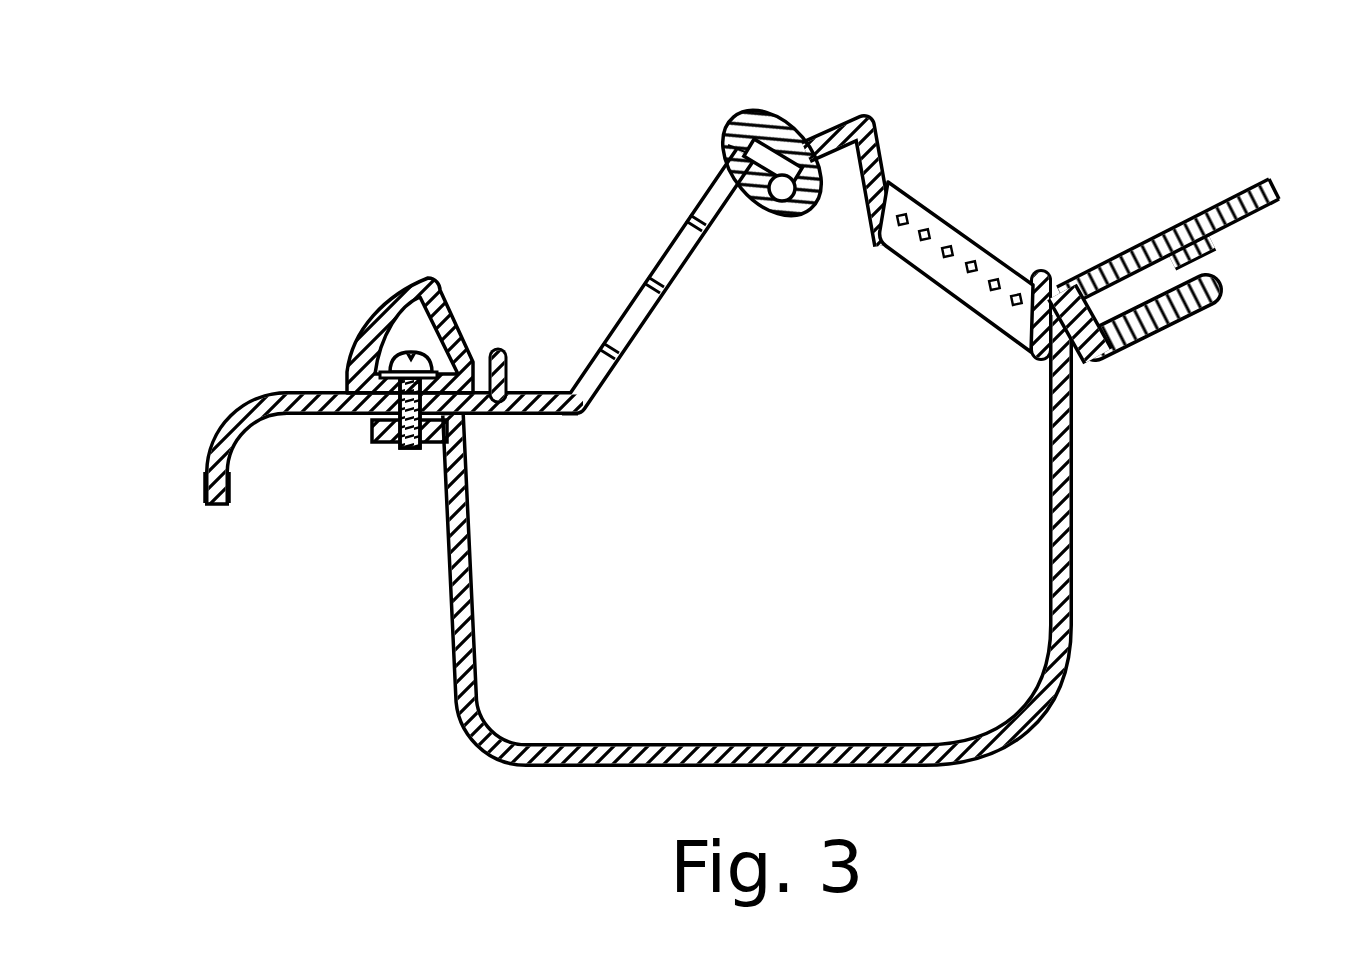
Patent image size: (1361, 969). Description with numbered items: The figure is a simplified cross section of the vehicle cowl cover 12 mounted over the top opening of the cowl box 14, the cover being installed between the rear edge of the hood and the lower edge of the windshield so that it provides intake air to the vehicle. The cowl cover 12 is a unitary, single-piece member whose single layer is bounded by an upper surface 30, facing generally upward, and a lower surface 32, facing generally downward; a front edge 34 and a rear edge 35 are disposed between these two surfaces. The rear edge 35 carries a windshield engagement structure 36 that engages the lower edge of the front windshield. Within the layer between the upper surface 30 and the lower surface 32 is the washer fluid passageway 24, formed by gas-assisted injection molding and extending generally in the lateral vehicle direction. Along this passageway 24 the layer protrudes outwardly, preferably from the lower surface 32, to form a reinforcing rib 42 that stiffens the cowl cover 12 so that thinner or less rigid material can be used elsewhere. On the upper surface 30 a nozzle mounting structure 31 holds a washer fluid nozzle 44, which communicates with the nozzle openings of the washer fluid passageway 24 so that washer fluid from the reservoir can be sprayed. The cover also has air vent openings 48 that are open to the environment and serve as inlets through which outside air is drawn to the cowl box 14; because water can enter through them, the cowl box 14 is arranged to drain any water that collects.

The vehicle cowl cover 12 is at (950, 135).
The cowl box 14 is at (455, 700).
The washer fluid passageway 24 is at (768, 220).
The upper surface 30 is at (528, 380).
The nozzle mounting structure 31 is at (736, 160).
The lower surface 32 is at (567, 428).
The front edge 34 is at (217, 503).
The rear edge 35 is at (1266, 183).
The windshield engagement structure 36 is at (1166, 339).
The reinforcing rib 42 is at (818, 208).
The washer fluid nozzle 44 is at (738, 103).
The air vent opening 48 is at (970, 238).